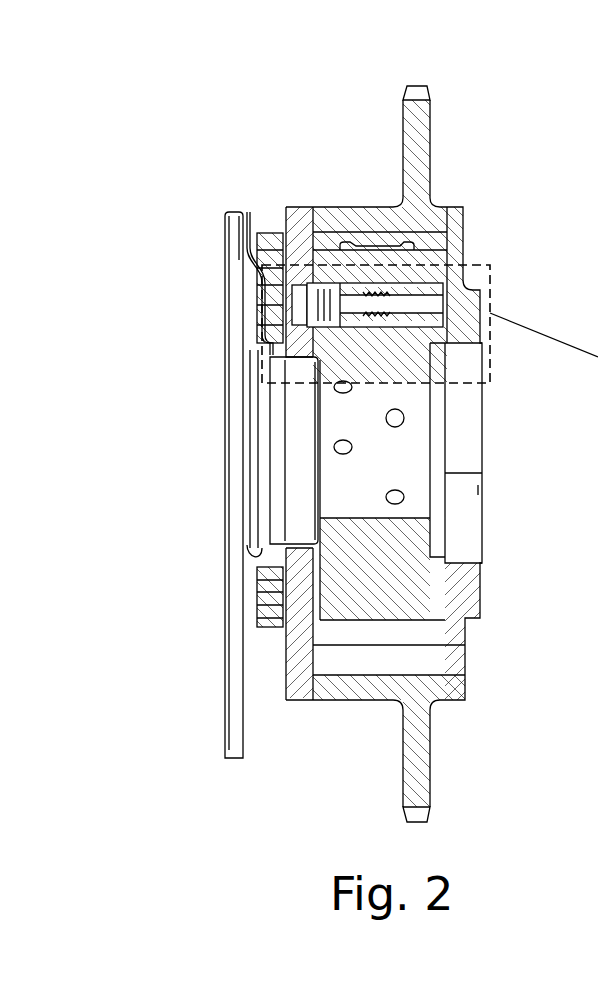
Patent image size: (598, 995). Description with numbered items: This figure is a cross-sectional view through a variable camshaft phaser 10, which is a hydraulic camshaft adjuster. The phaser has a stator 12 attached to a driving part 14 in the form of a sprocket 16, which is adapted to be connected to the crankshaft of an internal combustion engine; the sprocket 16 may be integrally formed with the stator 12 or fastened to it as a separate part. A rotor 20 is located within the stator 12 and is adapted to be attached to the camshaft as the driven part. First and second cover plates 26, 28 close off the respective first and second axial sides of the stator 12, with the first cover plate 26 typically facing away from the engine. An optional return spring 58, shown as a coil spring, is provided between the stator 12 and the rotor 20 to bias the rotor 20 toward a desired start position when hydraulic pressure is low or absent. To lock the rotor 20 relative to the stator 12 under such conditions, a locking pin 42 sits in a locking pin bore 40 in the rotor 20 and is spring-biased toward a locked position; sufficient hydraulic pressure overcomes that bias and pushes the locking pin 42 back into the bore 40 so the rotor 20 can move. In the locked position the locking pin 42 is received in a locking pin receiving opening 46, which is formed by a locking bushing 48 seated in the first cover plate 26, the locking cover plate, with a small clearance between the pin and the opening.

The variable camshaft phaser 10 is at (190, 121).
The stator 12 is at (431, 453).
The driving part 14 is at (469, 453).
The sprocket 16 is at (420, 93).
The rotor 20 is at (408, 363).
The first cover plate 26 is at (300, 217).
The second cover plate 28 is at (458, 216).
The locking pin bore 40 is at (380, 308).
The locking pin 42 is at (305, 350).
The locking pin receiving opening 46 is at (297, 308).
The locking bushing 48 is at (295, 278).
The return spring 58 is at (273, 238).